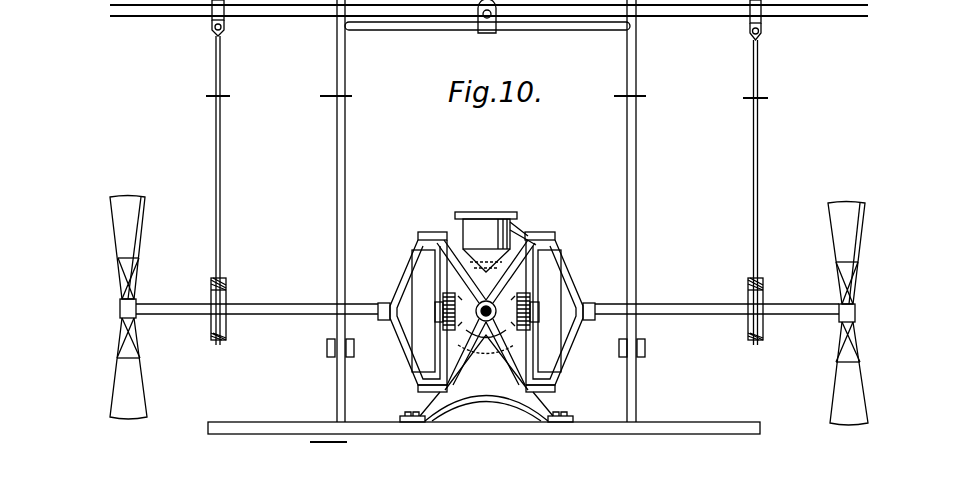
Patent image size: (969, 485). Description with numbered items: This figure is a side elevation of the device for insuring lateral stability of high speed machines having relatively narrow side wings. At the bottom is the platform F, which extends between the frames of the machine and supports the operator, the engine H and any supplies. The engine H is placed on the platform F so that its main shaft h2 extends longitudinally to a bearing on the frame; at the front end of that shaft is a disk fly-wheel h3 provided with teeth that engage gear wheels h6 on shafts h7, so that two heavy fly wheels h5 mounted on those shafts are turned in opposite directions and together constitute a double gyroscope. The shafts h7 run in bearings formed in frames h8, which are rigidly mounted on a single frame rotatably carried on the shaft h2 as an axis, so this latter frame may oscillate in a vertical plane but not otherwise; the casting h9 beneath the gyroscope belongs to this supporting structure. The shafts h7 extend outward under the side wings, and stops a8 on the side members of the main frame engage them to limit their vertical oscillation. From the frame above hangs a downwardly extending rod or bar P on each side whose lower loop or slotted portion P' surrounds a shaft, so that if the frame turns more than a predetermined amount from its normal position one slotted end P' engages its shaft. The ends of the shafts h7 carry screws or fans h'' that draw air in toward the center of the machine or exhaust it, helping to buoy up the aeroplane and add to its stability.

The platform F is at (697, 431).
The downwardly extending rod or bar P is at (494, 172).
The loop or slotted portion P' is at (499, 307).
The shafts h7 is at (487, 303).
The screws or fans h'' is at (489, 311).
The stops a8 is at (657, 358).
The engine H is at (463, 226).
The frames h8 is at (572, 282).
The heavy fly wheels h5 is at (577, 378).
The main shaft h2 is at (486, 301).
The gear wheels h6 is at (532, 304).
The bracket / stand h9 is at (455, 356).
The disk fly-wheel h3 is at (514, 245).